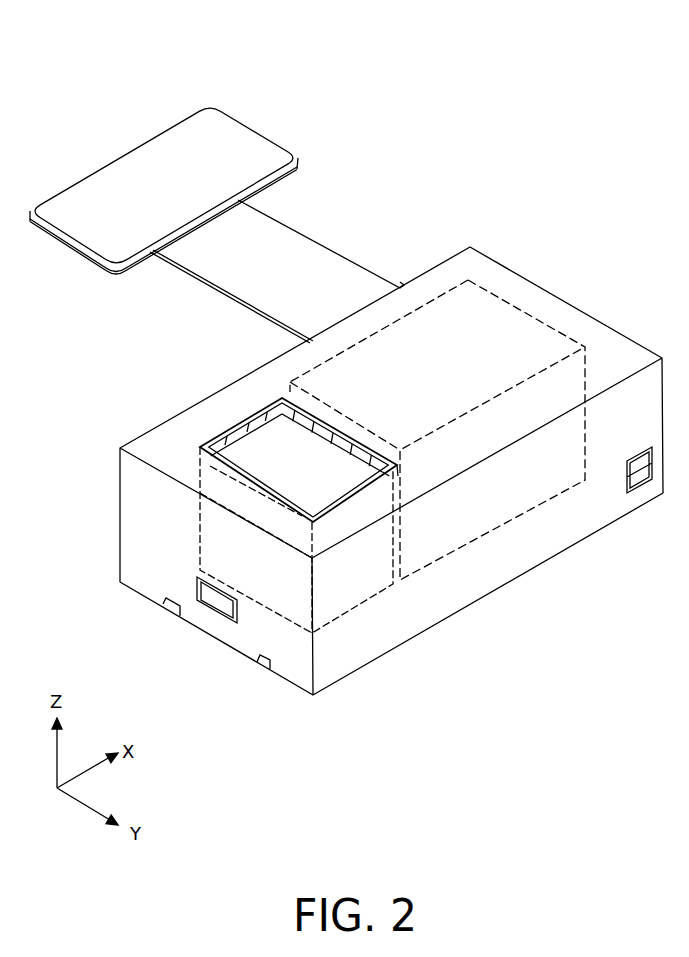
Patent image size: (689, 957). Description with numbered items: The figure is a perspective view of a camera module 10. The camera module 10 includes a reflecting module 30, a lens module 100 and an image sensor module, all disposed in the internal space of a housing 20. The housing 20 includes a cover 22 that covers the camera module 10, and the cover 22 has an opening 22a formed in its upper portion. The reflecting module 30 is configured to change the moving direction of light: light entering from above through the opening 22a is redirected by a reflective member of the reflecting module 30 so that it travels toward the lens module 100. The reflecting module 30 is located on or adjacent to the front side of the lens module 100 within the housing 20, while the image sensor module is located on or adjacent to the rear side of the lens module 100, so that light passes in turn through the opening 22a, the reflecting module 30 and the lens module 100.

The camera module 10 is at (346, 365).
The housing 20 is at (358, 646).
The cover 22 is at (163, 447).
The opening 22a is at (272, 458).
The reflecting module 30 is at (357, 574).
The lens module 100 is at (478, 504).